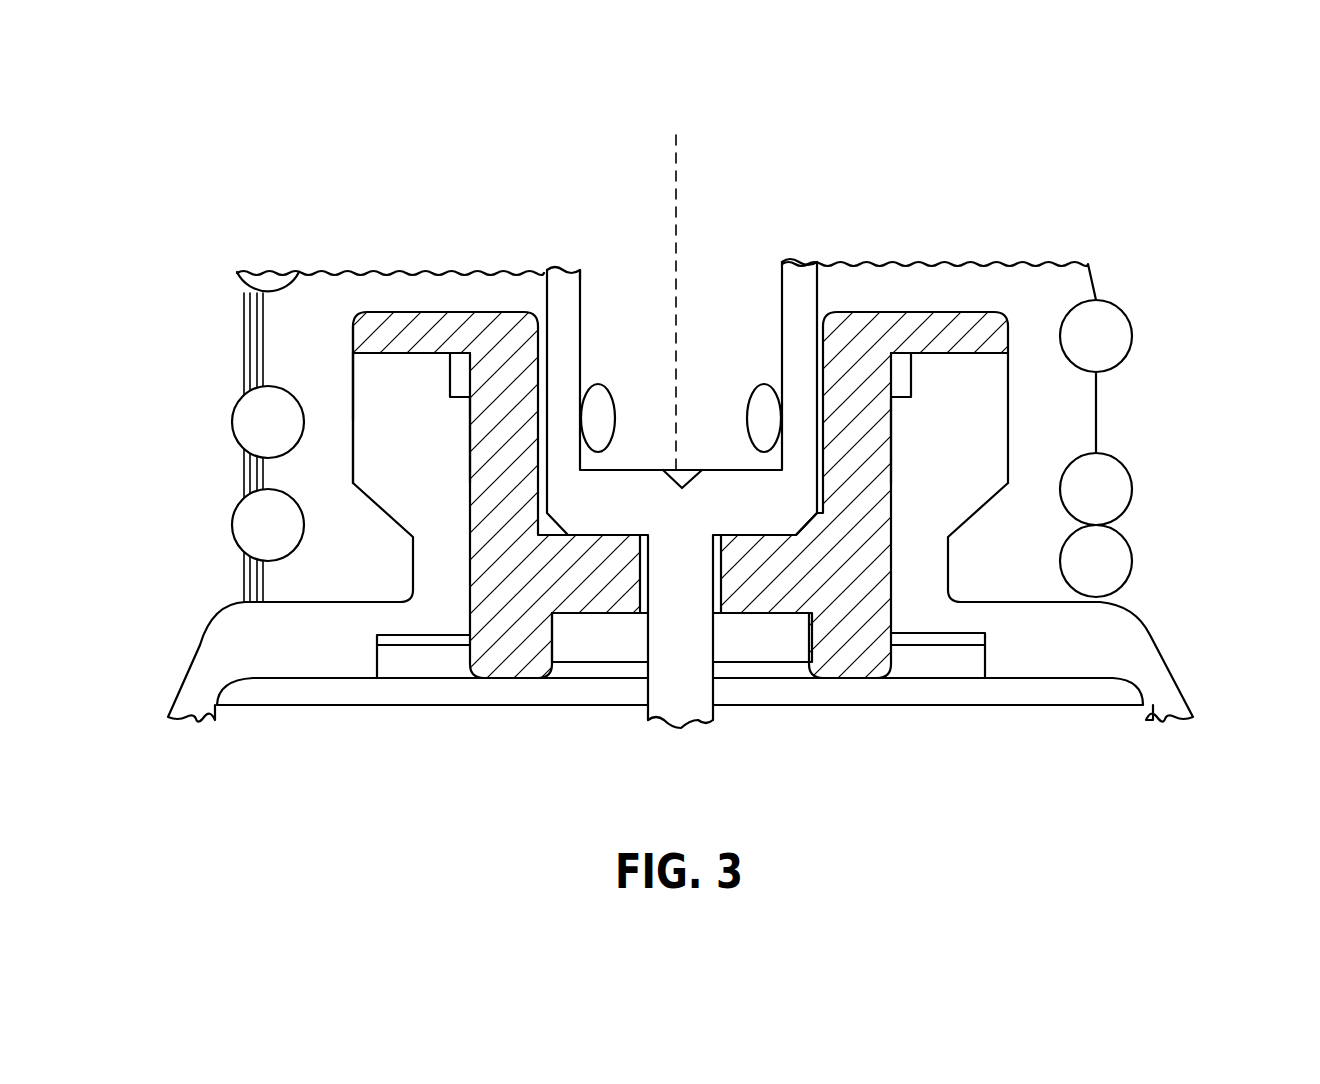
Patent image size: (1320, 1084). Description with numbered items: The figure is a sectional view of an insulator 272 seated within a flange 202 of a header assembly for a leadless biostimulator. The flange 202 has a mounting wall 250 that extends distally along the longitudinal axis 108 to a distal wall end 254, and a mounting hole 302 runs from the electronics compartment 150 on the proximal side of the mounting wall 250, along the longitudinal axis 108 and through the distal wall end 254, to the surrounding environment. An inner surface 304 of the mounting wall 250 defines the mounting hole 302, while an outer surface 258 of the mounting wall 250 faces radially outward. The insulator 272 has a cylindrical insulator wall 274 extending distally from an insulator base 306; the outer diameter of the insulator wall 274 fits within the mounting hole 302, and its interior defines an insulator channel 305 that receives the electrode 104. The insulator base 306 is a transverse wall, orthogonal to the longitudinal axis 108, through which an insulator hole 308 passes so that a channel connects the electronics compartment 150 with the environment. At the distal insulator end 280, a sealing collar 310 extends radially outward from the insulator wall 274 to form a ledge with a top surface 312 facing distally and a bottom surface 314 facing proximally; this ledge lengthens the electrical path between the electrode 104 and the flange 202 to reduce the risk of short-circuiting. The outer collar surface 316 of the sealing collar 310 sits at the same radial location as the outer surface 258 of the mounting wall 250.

The electrode 104 is at (678, 702).
The longitudinal axis 108 is at (678, 158).
The electronics compartment 150 is at (1023, 718).
The flange 202 is at (1167, 693).
The mounting wall 250 is at (383, 428).
The distal wall end 254 is at (908, 342).
The outer surface 258 is at (353, 386).
The insulator 272 is at (865, 548).
The insulator wall 274 is at (503, 449).
The distal insulator end 280 is at (503, 312).
The mounting hole 302 is at (902, 366).
The inner surface 304 is at (895, 422).
The insulator channel 305 is at (813, 527).
The insulator base 306 is at (597, 595).
The insulator hole 308 is at (717, 578).
The sealing collar 310 is at (421, 312).
The top surface 312 is at (378, 312).
The bottom surface 314 is at (353, 372).
The outer collar surface 316 is at (353, 339).